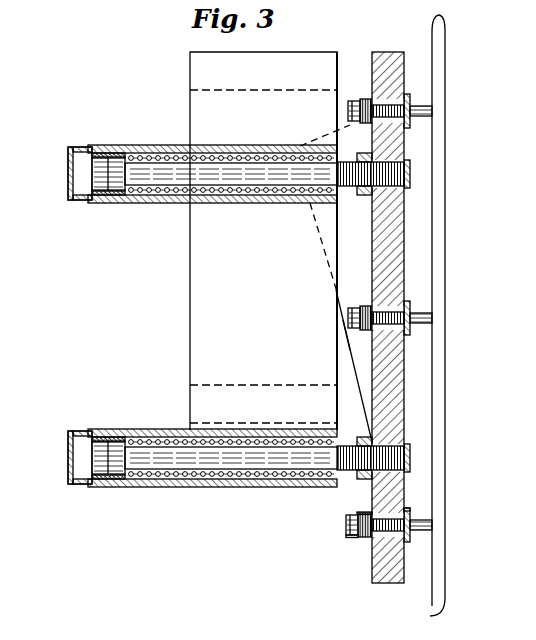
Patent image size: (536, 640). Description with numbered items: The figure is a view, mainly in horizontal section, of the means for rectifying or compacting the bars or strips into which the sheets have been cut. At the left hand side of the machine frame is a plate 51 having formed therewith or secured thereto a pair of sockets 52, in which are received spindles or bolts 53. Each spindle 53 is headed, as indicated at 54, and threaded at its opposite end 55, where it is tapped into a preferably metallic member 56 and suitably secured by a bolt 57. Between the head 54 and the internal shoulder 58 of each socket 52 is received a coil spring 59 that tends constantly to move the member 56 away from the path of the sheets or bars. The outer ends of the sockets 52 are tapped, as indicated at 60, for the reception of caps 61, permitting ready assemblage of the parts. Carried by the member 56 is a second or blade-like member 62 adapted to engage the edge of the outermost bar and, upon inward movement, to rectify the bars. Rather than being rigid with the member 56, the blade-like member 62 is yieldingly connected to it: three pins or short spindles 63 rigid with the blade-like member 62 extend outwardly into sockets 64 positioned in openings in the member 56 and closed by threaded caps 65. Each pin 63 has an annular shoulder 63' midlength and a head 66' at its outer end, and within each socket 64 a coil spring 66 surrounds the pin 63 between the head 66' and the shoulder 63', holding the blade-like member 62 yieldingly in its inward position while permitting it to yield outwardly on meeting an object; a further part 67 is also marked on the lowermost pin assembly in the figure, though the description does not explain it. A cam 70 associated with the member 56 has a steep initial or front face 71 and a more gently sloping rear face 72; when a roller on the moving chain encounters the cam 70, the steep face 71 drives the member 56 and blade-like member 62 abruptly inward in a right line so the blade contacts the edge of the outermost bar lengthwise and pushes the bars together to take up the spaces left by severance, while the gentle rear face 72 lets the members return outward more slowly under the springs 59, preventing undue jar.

The plate 51 is at (197, 337).
The socket 52 is at (161, 203).
The spindle or bolt 53 is at (163, 168).
The head 54 is at (115, 150).
The threaded end 55 is at (405, 161).
The metallic member 56 is at (380, 246).
The bolt 57 is at (364, 154).
The internal shoulder 58 is at (283, 203).
The coil spring 59 is at (226, 196).
The tapped outer end 60 is at (102, 203).
The cap 61 is at (68, 166).
The blade-like member 62 is at (441, 390).
The pin or short spindle 63 is at (427, 328).
The annular shoulder 63' is at (444, 323).
The socket 64 is at (362, 99).
The threaded cap 65 is at (348, 110).
The coil spring 66 is at (353, 498).
The head 66' is at (340, 551).
The collar 67 is at (405, 507).
The cam 70 is at (360, 360).
The front face 71 is at (345, 350).
The rear face 72 is at (318, 205).